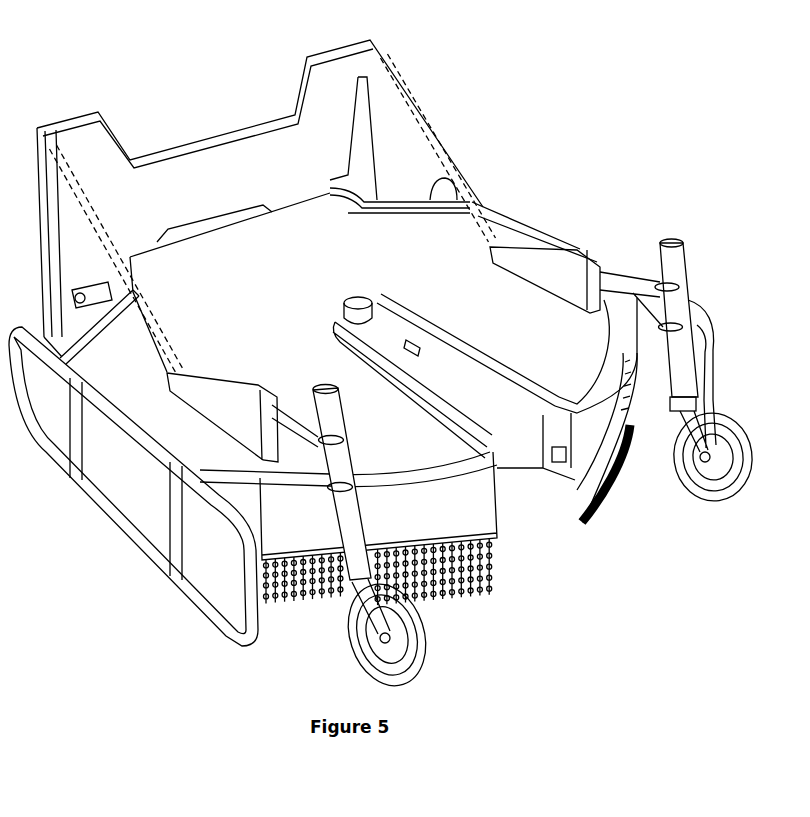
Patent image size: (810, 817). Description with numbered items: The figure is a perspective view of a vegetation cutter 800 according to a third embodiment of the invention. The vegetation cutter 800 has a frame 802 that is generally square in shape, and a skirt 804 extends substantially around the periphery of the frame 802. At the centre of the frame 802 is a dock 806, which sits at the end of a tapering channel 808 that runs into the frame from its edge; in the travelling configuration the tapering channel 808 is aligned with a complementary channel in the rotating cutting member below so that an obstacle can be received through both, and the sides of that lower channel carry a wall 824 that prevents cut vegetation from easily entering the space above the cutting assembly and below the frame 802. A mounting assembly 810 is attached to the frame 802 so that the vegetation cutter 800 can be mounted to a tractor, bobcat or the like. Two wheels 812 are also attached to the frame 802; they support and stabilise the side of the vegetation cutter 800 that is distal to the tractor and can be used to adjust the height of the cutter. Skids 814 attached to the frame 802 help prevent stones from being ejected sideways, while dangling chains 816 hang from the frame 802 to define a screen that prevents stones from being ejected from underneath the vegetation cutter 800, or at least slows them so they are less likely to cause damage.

The vegetation cutter 800 is at (563, 97).
The frame 802 is at (449, 267).
The skirt 804 is at (600, 420).
The dock 806 is at (372, 325).
The tapering channel 808 is at (540, 528).
The mounting assembly 810 is at (223, 173).
The wheels 812 is at (725, 415).
The skids 814 is at (138, 502).
The dangling chains 816 is at (298, 610).
The wall 824 is at (450, 382).